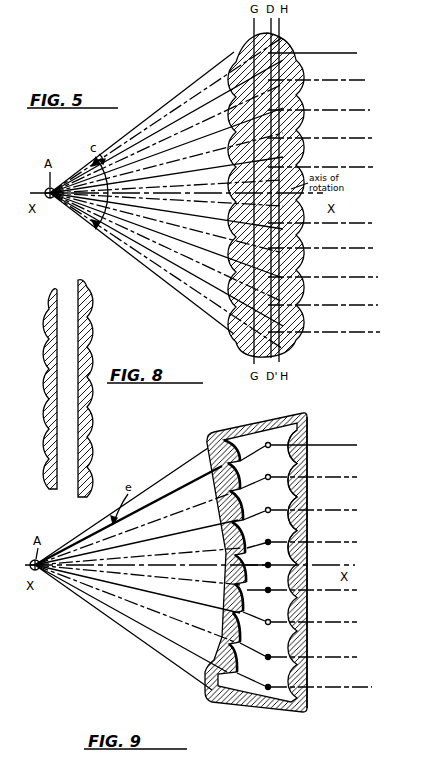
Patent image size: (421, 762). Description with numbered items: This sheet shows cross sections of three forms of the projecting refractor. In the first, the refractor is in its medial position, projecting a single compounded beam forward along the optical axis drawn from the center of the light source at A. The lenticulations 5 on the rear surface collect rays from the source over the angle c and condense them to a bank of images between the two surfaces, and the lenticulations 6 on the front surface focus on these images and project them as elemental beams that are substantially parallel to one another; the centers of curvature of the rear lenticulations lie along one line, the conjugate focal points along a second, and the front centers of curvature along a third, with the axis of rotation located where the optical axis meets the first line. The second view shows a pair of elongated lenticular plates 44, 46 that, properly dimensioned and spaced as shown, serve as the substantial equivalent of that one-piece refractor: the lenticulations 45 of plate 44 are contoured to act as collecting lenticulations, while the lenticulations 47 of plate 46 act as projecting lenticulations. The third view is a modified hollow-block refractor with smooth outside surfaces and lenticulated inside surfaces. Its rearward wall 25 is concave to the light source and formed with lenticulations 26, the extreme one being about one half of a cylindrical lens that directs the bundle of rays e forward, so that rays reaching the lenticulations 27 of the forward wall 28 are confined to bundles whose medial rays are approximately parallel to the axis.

In FIG. 5, the lenticulations on the rear surface 5 is at (232, 108).
In FIG. 5, the lenticulations on the front surface 6 is at (296, 108).
In FIG. 9, the rearward wall 25 is at (172, 640).
In FIG. 9, the lenticulations 26 is at (249, 422).
In FIG. 9, the lenticulations of the forward wall 27 is at (308, 448).
In FIG. 9, the forward wall 28 is at (311, 512).
In FIG. 8, the lenticular plate 44 is at (52, 289).
In FIG. 8, the lenticulations of the plate 45 is at (50, 477).
In FIG. 8, the lenticular plate 46 is at (90, 313).
In FIG. 8, the lenticulations of plate 47 is at (90, 367).